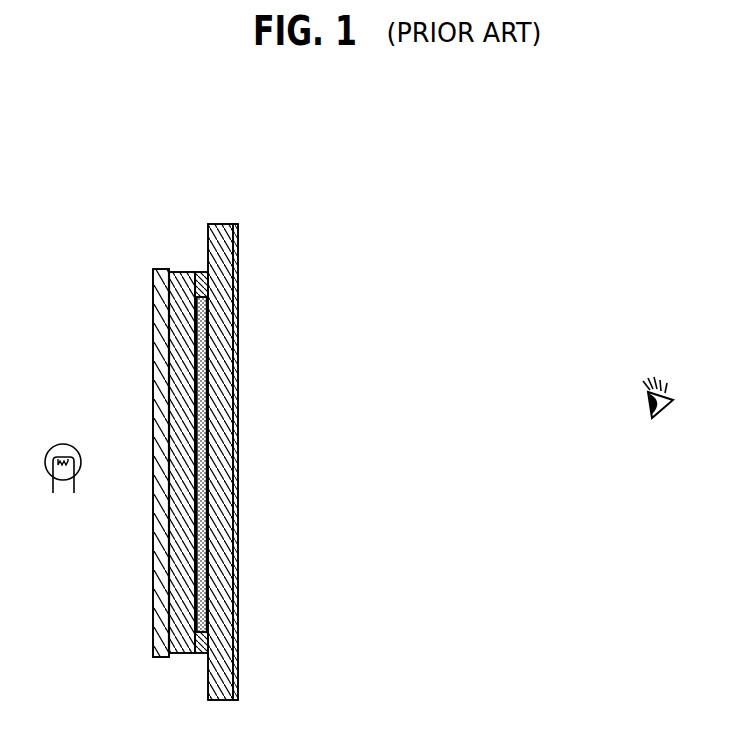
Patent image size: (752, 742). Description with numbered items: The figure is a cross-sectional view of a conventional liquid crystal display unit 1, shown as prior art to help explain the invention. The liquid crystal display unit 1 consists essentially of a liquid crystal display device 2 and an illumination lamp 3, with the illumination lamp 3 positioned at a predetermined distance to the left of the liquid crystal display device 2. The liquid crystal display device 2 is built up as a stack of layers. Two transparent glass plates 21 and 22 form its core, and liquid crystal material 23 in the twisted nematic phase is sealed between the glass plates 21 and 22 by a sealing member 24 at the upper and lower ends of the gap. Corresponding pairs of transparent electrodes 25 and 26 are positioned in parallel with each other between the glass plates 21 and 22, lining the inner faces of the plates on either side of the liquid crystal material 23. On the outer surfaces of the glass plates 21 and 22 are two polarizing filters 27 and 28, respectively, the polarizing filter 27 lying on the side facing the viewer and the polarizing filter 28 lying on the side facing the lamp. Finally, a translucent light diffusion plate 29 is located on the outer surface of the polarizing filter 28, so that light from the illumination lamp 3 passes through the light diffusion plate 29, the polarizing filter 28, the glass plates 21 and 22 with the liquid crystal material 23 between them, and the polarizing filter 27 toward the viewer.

The liquid crystal display unit 1 is at (18, 221).
The liquid crystal display device 2 is at (182, 192).
The illumination lamp 3 is at (70, 445).
The transparent glass plate 21 is at (222, 548).
The transparent glass plate 22 is at (183, 590).
The liquid crystal material 23 is at (200, 415).
The sealing member 24 is at (200, 271).
The transparent electrode 25 is at (208, 327).
The transparent electrode 26 is at (198, 470).
The polarizing filter 27 is at (238, 233).
The polarizing filter 28 is at (171, 345).
The translucent light diffusion plate 29 is at (160, 552).